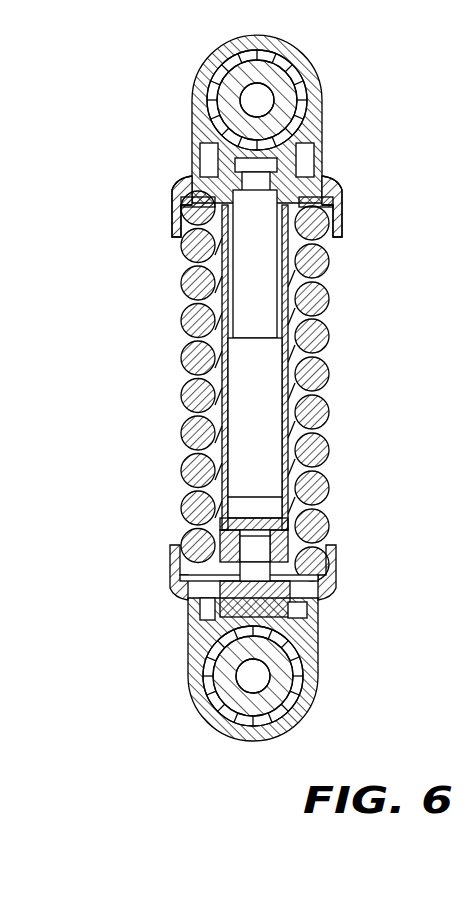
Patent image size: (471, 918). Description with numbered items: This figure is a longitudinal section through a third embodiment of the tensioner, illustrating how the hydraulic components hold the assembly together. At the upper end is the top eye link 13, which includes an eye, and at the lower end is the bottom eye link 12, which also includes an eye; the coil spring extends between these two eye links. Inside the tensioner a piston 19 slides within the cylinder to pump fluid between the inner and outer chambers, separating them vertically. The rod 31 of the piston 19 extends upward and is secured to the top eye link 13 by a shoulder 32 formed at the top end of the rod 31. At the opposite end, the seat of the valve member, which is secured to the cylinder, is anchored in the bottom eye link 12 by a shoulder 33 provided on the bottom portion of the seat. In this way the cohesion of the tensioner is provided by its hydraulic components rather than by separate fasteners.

The bottom eye link 12 is at (293, 722).
The top eye link 13 is at (312, 82).
The piston 19 is at (272, 407).
The rod 31 is at (248, 279).
The shoulder 32 is at (233, 162).
The shoulder 33 is at (287, 618).